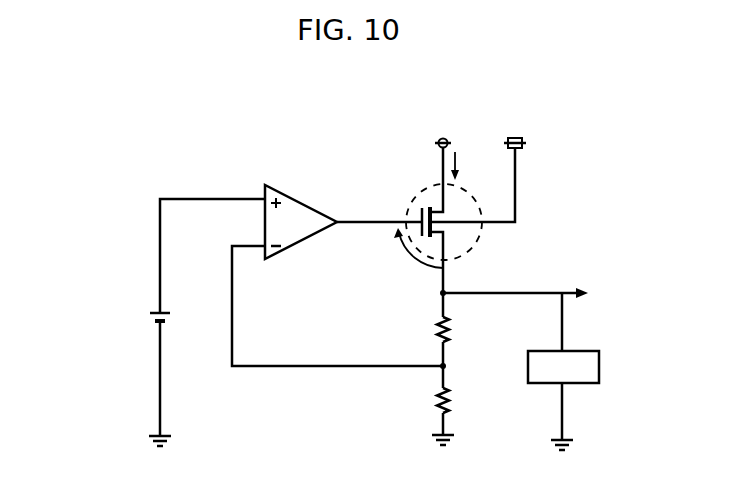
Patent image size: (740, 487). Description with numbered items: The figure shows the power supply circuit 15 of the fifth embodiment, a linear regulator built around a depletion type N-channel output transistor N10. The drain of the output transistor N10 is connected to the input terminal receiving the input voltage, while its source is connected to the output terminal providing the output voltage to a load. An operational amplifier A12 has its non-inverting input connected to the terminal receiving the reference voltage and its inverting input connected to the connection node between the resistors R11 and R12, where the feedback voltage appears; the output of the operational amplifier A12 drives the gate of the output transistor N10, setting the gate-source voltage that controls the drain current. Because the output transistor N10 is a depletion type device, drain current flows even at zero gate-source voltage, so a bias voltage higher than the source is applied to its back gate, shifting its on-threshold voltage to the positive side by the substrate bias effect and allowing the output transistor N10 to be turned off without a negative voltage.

The power supply circuit 15 is at (89, 114).
The operational amplifier A12 is at (308, 207).
The output transistor N10 is at (447, 238).
The resistor R12 is at (455, 331).
The resistor R11 is at (455, 402).